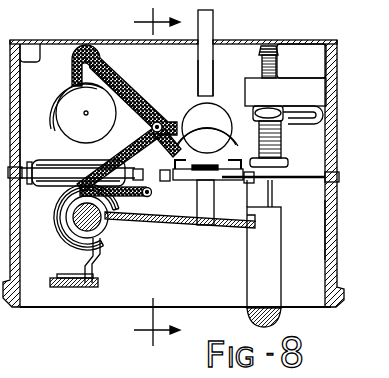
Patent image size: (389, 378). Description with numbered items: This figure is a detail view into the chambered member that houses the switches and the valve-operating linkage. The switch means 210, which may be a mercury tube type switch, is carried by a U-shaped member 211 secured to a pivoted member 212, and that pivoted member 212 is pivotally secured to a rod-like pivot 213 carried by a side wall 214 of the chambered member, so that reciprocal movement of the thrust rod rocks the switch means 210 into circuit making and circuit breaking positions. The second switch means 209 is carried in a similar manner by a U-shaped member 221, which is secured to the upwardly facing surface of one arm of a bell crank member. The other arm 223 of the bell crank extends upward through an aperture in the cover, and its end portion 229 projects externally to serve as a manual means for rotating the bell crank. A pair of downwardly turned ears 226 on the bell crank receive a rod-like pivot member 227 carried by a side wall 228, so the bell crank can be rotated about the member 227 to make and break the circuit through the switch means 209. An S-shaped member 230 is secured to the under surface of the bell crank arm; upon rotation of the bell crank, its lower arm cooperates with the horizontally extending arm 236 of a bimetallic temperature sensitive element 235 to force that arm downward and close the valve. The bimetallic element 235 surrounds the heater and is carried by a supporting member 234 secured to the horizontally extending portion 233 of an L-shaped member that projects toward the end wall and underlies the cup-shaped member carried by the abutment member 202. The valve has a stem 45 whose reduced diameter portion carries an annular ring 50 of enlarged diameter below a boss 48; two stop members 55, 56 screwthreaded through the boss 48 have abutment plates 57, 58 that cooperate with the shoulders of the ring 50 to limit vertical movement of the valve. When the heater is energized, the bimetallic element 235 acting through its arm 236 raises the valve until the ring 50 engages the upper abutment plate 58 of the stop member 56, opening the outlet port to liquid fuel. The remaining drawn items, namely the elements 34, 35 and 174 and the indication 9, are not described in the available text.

The housing 34 is at (40, 40).
The housing wall step 35 is at (40, 46).
The side wall 214 is at (22, 92).
The U-shaped member 211 is at (57, 122).
The switch means 210 is at (99, 108).
The pivoted member 212 is at (56, 160).
The rod-like pivot 213 is at (24, 186).
The bimetallic temperature sensitive element 235 is at (122, 210).
The switch means 209 is at (221, 141).
The U-shaped member 221 is at (218, 102).
The end portion 229 is at (214, 28).
The arm 223 is at (205, 62).
The downwardly turned ears 226 is at (179, 181).
The S-shaped member 230 is at (209, 227).
The horizontally extending arm 236 is at (163, 225).
The abutment member 202 is at (82, 226).
The supporting member 234 is at (102, 264).
The horizontally extending portion 233 is at (92, 288).
The stop member 56 is at (274, 53).
The stop member 55 is at (283, 74).
The boss 48 is at (273, 100).
The abutment plate 58 is at (282, 124).
The abutment plate 57 is at (304, 137).
The annular ring 50 is at (270, 163).
The rod-like pivot member 227 is at (303, 180).
The side wall 228 is at (320, 228).
The stem 45 is at (272, 289).
The member 174 is at (1, 370).
The section line 9- 9 is at (147, 177).